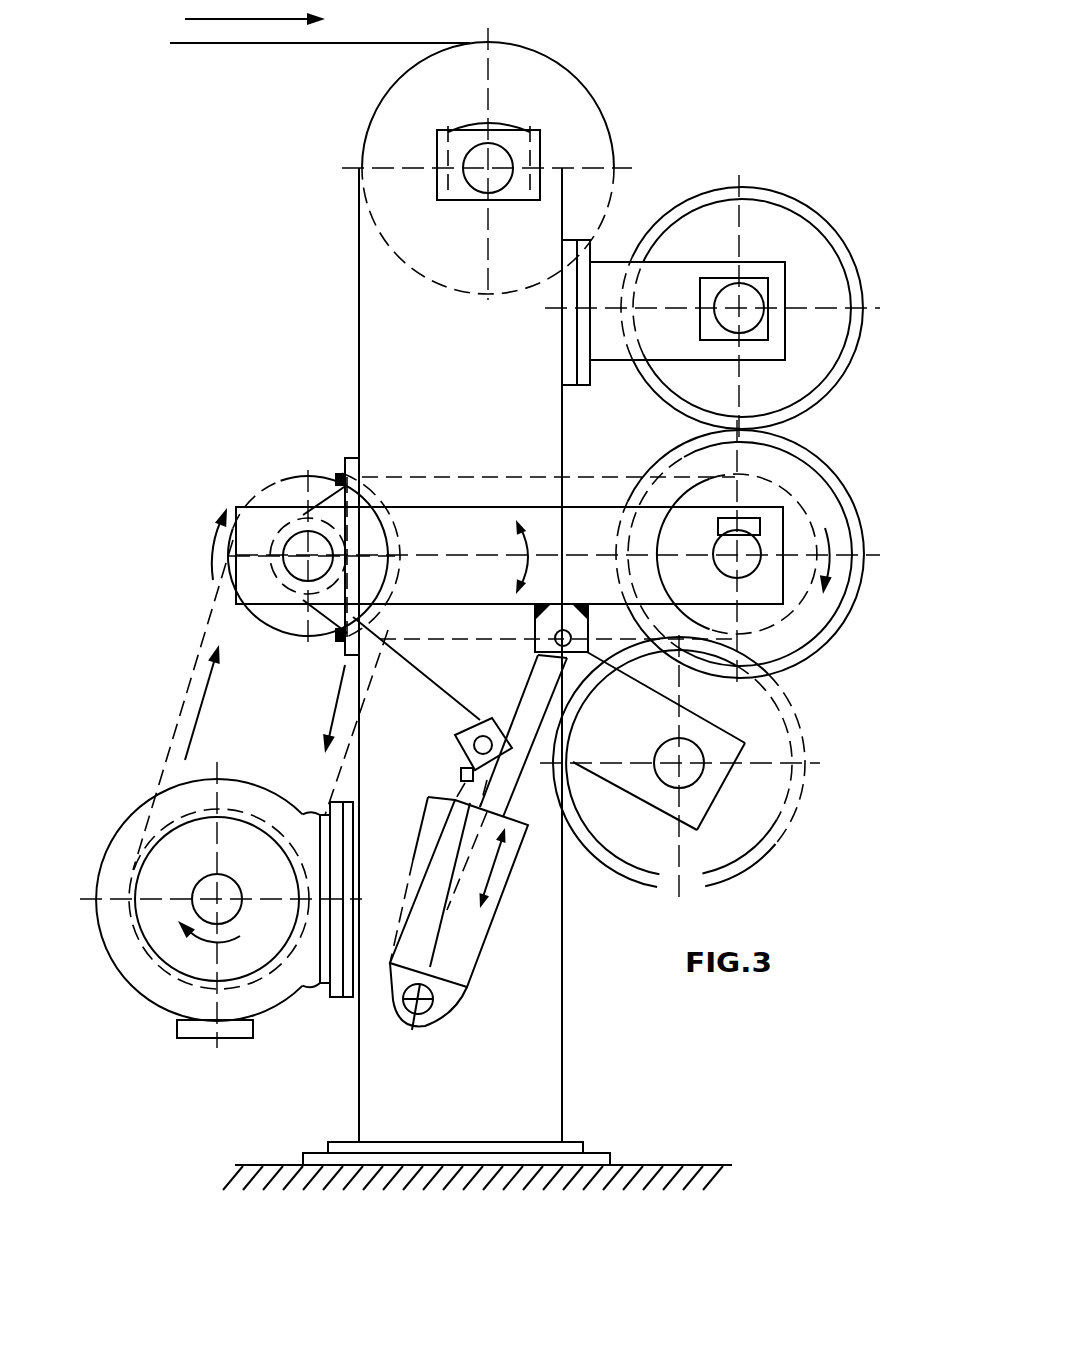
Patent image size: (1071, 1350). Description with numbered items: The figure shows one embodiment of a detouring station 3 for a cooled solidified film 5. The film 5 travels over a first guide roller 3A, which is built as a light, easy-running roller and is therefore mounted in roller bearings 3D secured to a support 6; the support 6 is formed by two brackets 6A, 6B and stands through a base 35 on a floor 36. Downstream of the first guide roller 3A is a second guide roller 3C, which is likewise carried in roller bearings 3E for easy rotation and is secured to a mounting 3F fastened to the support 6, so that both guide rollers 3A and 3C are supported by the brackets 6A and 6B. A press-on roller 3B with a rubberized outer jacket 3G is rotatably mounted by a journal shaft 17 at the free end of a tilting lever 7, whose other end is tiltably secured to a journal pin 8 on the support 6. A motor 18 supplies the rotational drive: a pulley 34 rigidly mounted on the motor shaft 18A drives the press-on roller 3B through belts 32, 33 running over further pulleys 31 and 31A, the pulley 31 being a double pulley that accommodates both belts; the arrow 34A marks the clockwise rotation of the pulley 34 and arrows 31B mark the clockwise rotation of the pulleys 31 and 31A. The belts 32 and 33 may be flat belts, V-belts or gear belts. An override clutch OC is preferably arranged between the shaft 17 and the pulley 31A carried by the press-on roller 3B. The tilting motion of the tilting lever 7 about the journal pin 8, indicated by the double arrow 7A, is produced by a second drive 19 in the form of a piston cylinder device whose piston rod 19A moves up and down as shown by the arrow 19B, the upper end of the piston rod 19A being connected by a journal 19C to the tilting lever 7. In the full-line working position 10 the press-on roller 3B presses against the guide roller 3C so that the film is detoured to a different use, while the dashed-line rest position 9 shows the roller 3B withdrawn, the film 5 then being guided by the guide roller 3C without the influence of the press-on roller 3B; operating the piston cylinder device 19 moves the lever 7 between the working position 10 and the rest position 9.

The detouring station 3 is at (716, 93).
The first guide roller 3A is at (548, 72).
The press-on roller 3B is at (822, 614).
The second guide roller 3C is at (800, 216).
The roller bearings 3D is at (512, 140).
The roller bearings 3E is at (709, 290).
The mounting 3F is at (641, 352).
The rubberized outer jacket 3G is at (803, 652).
The cooled solidified film 5 is at (258, 48).
The support 6 is at (585, 1032).
The bracket 6A is at (537, 1000).
The bracket 6B is at (570, 996).
The tilting lever 7 is at (452, 545).
The double arrow 7A is at (537, 548).
The journal pin 8 is at (295, 548).
The rest position 9 is at (815, 815).
The working position 10 is at (820, 439).
The journal shaft 17 is at (752, 553).
The motor 18 is at (150, 998).
The motor shaft 18A is at (233, 888).
The second drive 19 is at (467, 949).
The piston rod 19A is at (530, 692).
The arrow 19B is at (505, 878).
The journal 19C is at (535, 606).
The double pulley 31 is at (292, 492).
The pulley 31A is at (707, 493).
The arrows 31B is at (832, 545).
The belt 32 is at (198, 663).
The belt 33 is at (478, 478).
The pulley 34 is at (243, 970).
The arrow 34A is at (192, 937).
The base 35 is at (598, 1160).
The floor 36 is at (698, 1165).
The override clutch OC is at (752, 520).